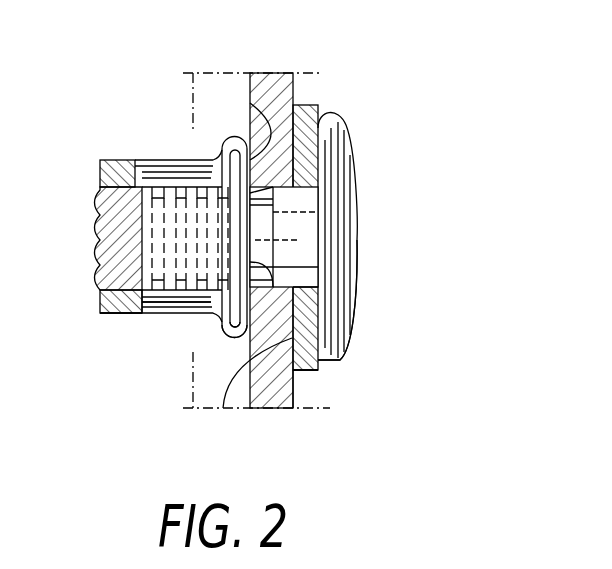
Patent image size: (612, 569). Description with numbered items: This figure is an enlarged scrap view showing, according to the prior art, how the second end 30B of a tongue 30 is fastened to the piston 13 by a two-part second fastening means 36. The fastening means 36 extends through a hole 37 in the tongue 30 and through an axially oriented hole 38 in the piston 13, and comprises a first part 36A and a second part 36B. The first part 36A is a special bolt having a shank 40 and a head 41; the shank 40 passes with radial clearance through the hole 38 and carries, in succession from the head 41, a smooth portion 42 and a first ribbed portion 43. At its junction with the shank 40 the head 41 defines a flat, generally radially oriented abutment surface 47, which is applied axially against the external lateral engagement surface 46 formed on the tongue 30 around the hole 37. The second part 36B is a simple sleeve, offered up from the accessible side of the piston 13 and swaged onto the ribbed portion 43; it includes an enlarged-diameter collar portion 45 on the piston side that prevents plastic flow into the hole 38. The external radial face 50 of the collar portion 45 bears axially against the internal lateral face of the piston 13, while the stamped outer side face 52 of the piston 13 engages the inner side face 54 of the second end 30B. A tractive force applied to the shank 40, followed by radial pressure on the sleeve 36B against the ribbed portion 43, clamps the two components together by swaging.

The piston 13 is at (273, 68).
The tongue 30 is at (318, 107).
The second end of the tongue 30B is at (314, 378).
The second fastening means 36 is at (174, 150).
The first part (bolt) 36A is at (358, 332).
The second part (sleeve) 36B is at (139, 320).
The hole in the tongue 37 is at (310, 207).
The hole in the piston 38 is at (215, 262).
The shank 40 is at (92, 238).
The head 41 is at (320, 112).
The smooth portion 42 is at (293, 249).
The first ribbed portion 43 is at (176, 295).
The collar portion 45 is at (226, 325).
The external lateral engagement surface 46 is at (322, 150).
The abutment surface 47 is at (313, 313).
The external radial face of the collar portion 50 is at (258, 113).
The outer side face of the piston 52 is at (296, 387).
The inner side face of the second end of the tongue 54 is at (222, 408).